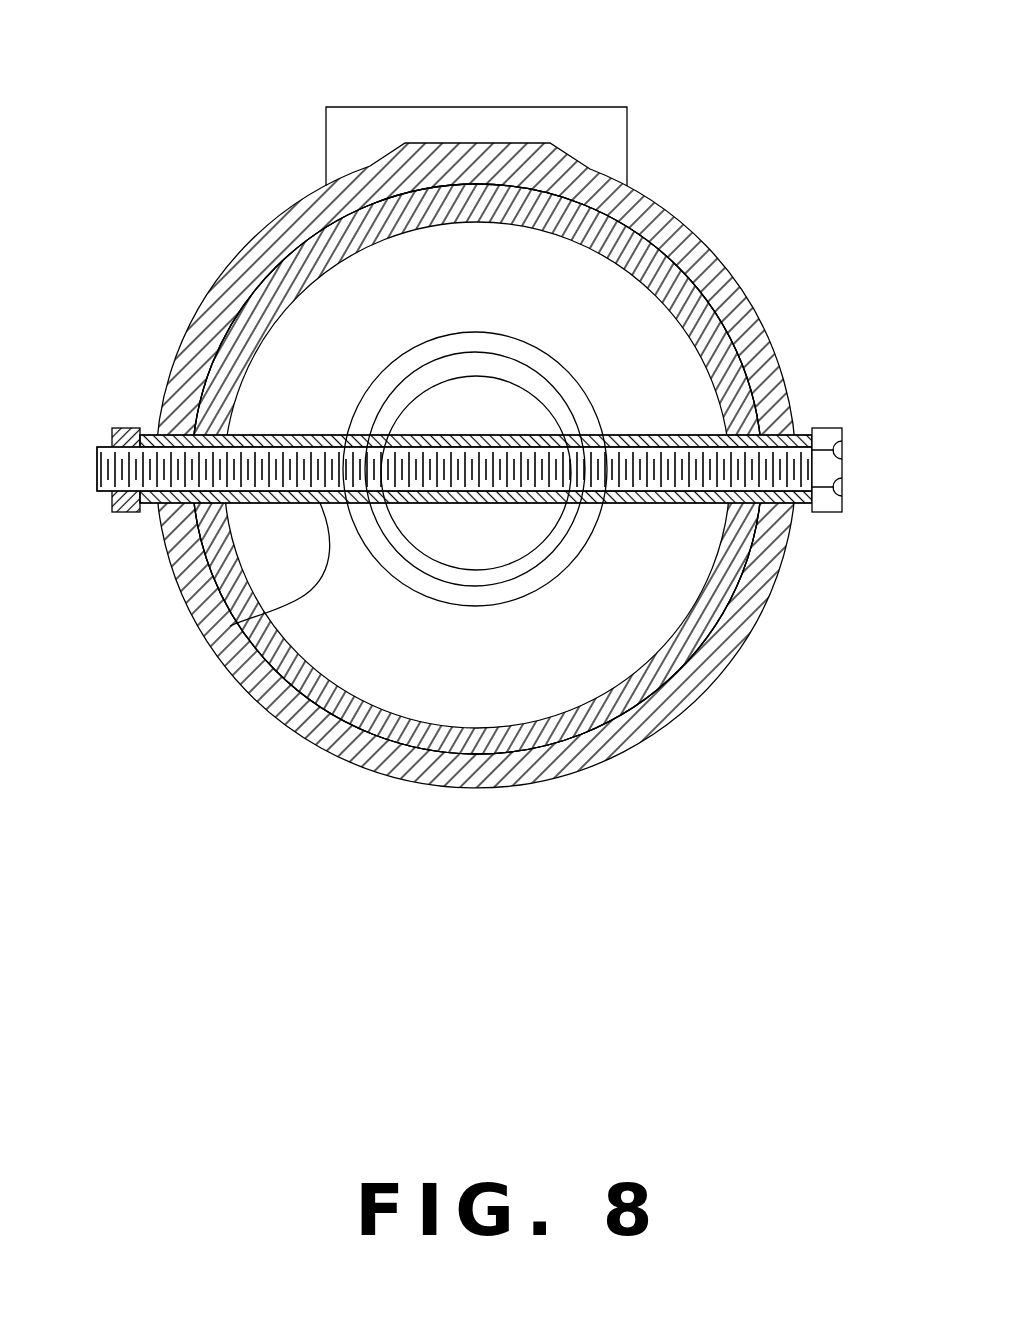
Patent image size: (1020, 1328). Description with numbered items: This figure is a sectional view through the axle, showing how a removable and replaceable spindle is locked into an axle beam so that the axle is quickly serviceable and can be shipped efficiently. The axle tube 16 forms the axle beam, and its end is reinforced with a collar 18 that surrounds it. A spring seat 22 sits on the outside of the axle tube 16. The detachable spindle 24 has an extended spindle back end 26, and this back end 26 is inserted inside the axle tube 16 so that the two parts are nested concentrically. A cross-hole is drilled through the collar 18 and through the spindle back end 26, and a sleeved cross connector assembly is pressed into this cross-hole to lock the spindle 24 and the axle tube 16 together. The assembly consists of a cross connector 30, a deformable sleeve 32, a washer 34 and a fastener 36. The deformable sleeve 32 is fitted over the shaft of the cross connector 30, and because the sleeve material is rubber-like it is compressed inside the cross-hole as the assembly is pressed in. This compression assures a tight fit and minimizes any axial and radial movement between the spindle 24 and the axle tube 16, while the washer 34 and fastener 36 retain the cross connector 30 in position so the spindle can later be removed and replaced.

The axle tube 16 is at (652, 196).
The collar 18 is at (318, 198).
The spring seat 22 is at (473, 107).
The spindle 24 is at (513, 605).
The spindle back end 26 is at (639, 302).
The cross connector 30 is at (840, 427).
The deformable sleeve 32 is at (230, 626).
The washer 34 is at (153, 427).
The fastener 36 is at (108, 428).